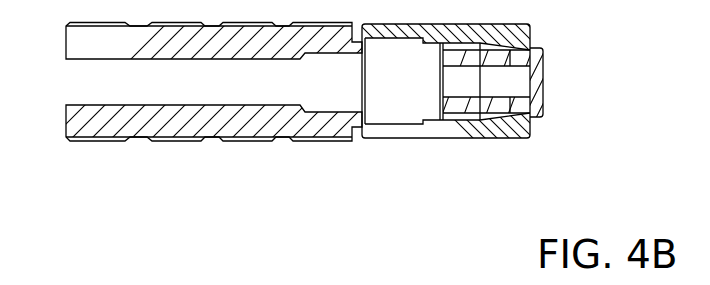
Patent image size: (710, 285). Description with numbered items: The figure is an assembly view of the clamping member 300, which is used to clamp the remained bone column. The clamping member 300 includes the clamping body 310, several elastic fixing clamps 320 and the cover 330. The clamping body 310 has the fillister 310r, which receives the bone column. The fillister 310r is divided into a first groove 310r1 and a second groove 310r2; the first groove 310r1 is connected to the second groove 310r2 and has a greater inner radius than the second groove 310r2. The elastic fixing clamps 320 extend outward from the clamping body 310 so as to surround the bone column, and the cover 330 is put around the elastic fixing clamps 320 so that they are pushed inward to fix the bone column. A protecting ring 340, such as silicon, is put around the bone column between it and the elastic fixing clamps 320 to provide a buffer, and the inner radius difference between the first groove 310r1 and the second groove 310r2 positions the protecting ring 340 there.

The clamping member 300 is at (350, 123).
The clamping body 310 is at (103, 128).
The fillister 310r is at (308, 188).
The first groove 310r1 is at (333, 82).
The second groove 310r2 is at (217, 80).
The elastic fixing clamps 320 is at (481, 121).
The cover 330 is at (443, 125).
The protecting ring 340 is at (537, 118).